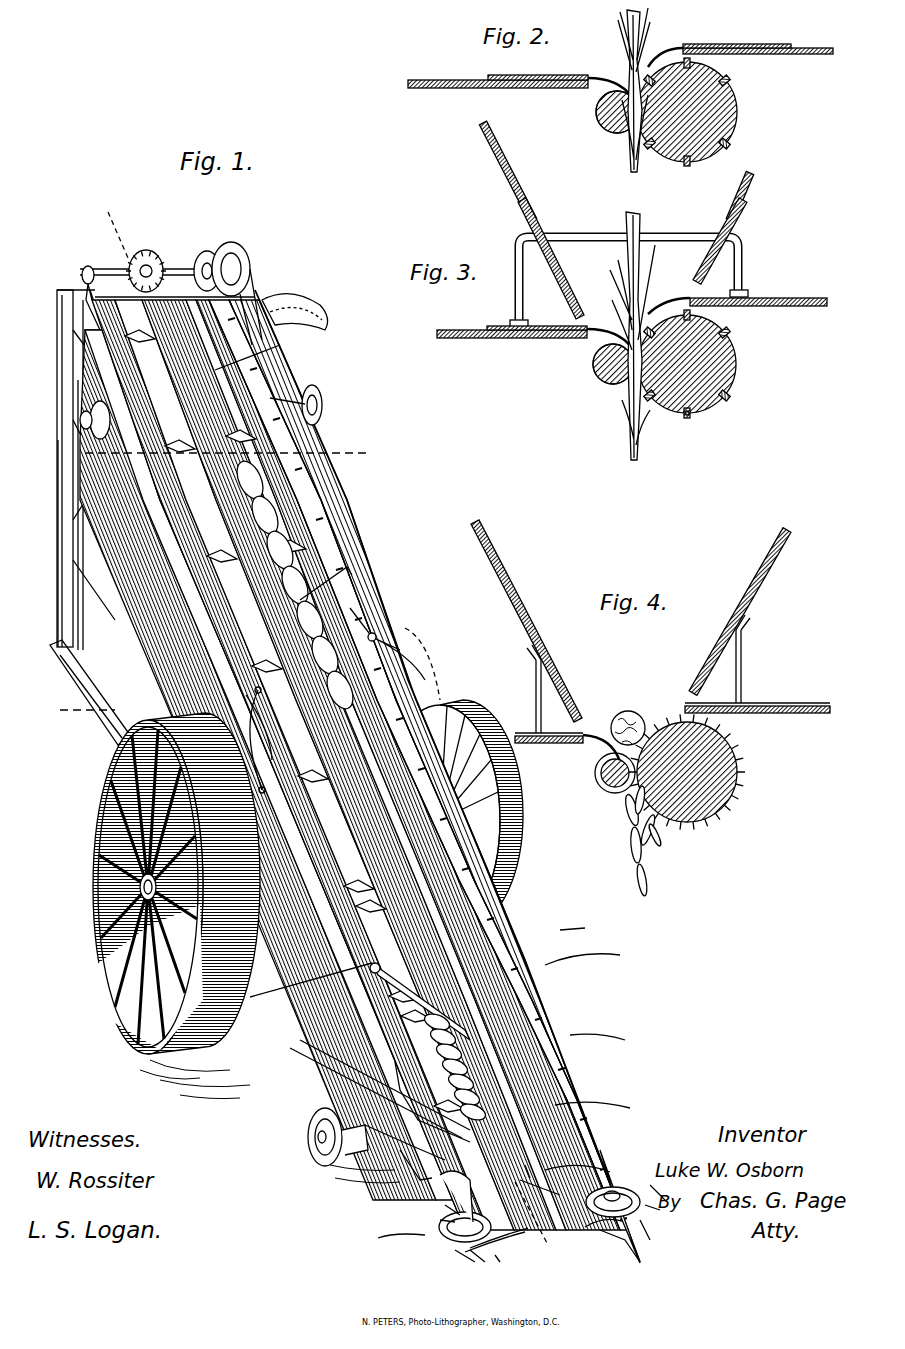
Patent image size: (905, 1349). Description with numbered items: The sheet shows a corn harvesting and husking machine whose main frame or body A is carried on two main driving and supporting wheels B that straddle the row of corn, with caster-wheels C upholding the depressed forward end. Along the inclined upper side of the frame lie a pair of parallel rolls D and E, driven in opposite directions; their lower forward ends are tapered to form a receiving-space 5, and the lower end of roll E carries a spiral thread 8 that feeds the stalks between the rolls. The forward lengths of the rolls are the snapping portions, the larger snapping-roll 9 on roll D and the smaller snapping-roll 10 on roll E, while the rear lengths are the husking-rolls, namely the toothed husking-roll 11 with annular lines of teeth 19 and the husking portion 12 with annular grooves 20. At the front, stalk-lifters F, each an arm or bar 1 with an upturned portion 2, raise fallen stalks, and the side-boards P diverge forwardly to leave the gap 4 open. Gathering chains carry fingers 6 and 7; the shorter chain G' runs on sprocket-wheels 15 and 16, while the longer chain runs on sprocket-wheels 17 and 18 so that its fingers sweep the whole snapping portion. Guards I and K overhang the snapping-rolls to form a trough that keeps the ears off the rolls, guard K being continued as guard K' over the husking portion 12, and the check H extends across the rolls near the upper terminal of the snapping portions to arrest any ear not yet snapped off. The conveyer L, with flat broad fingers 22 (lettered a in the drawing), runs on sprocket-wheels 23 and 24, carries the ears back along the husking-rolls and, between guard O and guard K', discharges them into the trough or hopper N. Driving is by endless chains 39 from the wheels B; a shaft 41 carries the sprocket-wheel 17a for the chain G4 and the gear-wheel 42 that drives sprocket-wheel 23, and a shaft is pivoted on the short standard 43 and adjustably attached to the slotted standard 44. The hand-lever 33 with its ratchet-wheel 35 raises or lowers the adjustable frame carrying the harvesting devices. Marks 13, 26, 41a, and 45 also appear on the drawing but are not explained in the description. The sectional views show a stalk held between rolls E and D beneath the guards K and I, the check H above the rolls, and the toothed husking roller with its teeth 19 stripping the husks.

In FIG. 1, the arm or bar 1 is at (527, 1242).
In FIG. 1, the upturned portion 2 is at (561, 1241).
In FIG. 1, the gap 4 is at (540, 1182).
In FIG. 1, the receiving-space 5 is at (305, 1045).
In FIG. 1, the fingers 6 is at (587, 1103).
In FIG. 1, the fingers 7 is at (401, 1242).
In FIG. 1, the spiral thread 8 is at (269, 787).
In FIG. 2, the snapping portion of roll D 9 is at (698, 158).
In FIG. 3, the snapping portion of roll D 9 is at (700, 408).
In FIG. 1, the snapping portion of roll E 10 is at (112, 414).
In FIG. 2, the snapping portion of roll E 10 is at (606, 130).
In FIG. 3, the snapping portion of roll E 10 is at (600, 386).
In FIG. 4, the husking-roll 11 is at (722, 812).
In FIG. 4, the husking portion of roll E 12 is at (602, 786).
In FIG. 3, the lug tip 13 is at (686, 422).
In FIG. 1, the sprocket-wheel 15 is at (408, 1130).
In FIG. 1, the sprocket-wheel 16 is at (445, 1233).
In FIG. 1, the sprocket-wheel 17 is at (362, 623).
In FIG. 1, the sprocket-wheel 17a is at (248, 262).
In FIG. 1, the sprocket-wheel 18 is at (622, 1190).
In FIG. 4, the husking-teeth 19 is at (653, 803).
In FIG. 1, the annular grooves 20 is at (656, 1197).
In FIG. 1, the conveyer fingers 22 is at (258, 765).
In FIG. 1, the sprocket-wheel 23 is at (90, 266).
In FIG. 1, the sprocket-wheel 24 is at (403, 1165).
In FIG. 1, the elevator belt 26 is at (290, 765).
In FIG. 1, the hand-lever 33 is at (264, 740).
In FIG. 1, the ratchet-wheel 35 is at (162, 906).
In FIG. 1, the endless chains 39 is at (118, 590).
In FIG. 1, the shaft 41 is at (192, 266).
In FIG. 1, the belt pulley 41a is at (208, 251).
In FIG. 1, the gear-wheel 42 is at (146, 261).
In FIG. 1, the short standard 43 is at (432, 1093).
In FIG. 1, the slotted standard 44 is at (410, 999).
In FIG. 1, the adjusting lever 45 is at (360, 1050).
In FIG. 1, the main frame A is at (90, 519).
In FIG. 1, the main driving and supporting wheels B is at (520, 845).
In FIG. 1, the caster-wheels C is at (341, 1145).
In FIG. 1, the roll D is at (582, 946).
In FIG. 2, the roll D is at (697, 112).
In FIG. 3, the roll D is at (697, 364).
In FIG. 4, the roll D is at (699, 772).
In FIG. 1, the roll E is at (425, 1028).
In FIG. 2, the roll E is at (598, 113).
In FIG. 3, the roll E is at (595, 367).
In FIG. 4, the roll E is at (592, 773).
In FIG. 1, the stalk-lifters F is at (496, 1245).
In FIG. 1, the gathering chain G' is at (443, 1206).
In FIG. 1, the chain G4 is at (268, 380).
In FIG. 1, the check H is at (620, 1246).
In FIG. 3, the check H is at (640, 245).
In FIG. 2, the guard I is at (674, 48).
In FIG. 3, the guard I is at (660, 300).
In FIG. 1, the guard K is at (332, 584).
In FIG. 2, the guard K is at (520, 73).
In FIG. 3, the guard K is at (534, 318).
In FIG. 4, the guard K' is at (601, 729).
In FIG. 1, the conveyer L is at (112, 375).
In FIG. 1, the trough or hopper N is at (295, 307).
In FIG. 1, the guard O is at (255, 352).
In FIG. 1, the side-boards P is at (310, 518).
In FIG. 2, the side-boards P is at (498, 160).
In FIG. 3, the side-boards P is at (740, 210).
In FIG. 4, the side-boards P is at (492, 574).
In FIG. 1, the spout lip a is at (353, 721).